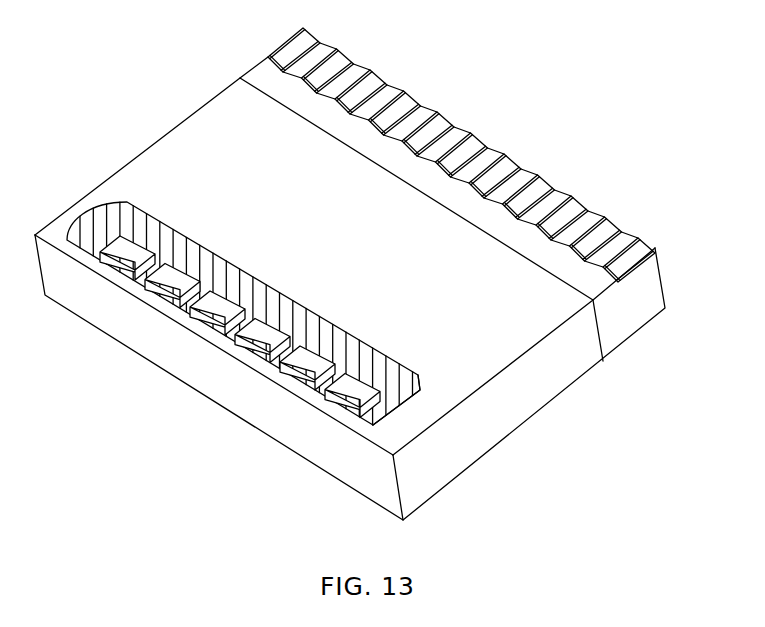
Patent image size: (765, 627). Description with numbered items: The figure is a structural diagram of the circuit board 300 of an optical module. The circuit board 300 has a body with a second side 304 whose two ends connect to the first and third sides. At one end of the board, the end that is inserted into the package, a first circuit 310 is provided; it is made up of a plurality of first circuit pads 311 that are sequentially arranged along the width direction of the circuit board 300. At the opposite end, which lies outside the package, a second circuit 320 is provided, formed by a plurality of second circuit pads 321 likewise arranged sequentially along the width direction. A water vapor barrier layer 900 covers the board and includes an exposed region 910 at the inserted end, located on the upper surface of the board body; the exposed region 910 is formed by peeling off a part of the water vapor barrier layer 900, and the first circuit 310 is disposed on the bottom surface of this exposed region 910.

The circuit board 300 is at (628, 317).
The second side 304 is at (205, 352).
The first circuit 310 is at (223, 492).
The first circuit pads 311 is at (357, 372).
The second circuit 320 is at (608, 121).
The second circuit pads 321 is at (495, 158).
The water vapor barrier layer 900 is at (205, 123).
The exposed region 910 is at (405, 373).